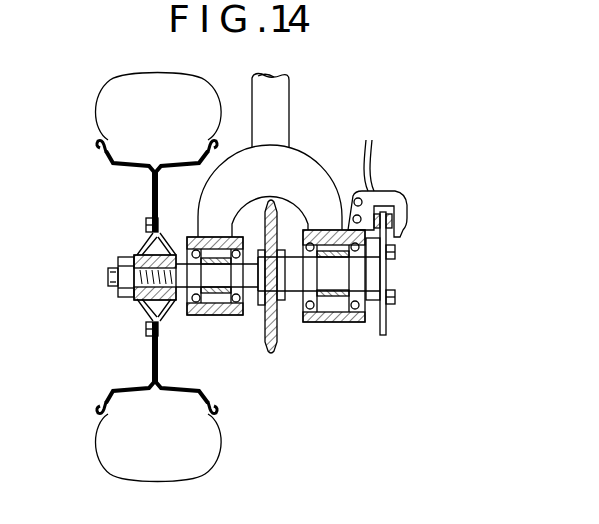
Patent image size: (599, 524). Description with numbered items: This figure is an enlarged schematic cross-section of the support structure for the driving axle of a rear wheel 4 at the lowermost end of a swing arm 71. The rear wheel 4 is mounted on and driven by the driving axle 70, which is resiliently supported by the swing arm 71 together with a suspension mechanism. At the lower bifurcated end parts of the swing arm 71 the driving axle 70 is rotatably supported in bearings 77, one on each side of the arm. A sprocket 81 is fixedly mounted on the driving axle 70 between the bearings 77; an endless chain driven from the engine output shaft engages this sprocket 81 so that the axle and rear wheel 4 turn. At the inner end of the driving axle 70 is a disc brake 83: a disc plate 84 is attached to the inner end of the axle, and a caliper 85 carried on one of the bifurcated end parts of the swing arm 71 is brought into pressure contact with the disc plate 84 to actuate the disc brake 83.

The rear wheel 4 is at (122, 388).
The driving axle 70 is at (253, 304).
The swing arm 71 is at (278, 103).
The bearings 77 is at (232, 306).
The sprocket 81 is at (278, 333).
The disc brake 83 is at (401, 252).
The disc plate 84 is at (386, 332).
The caliper 85 is at (392, 193).